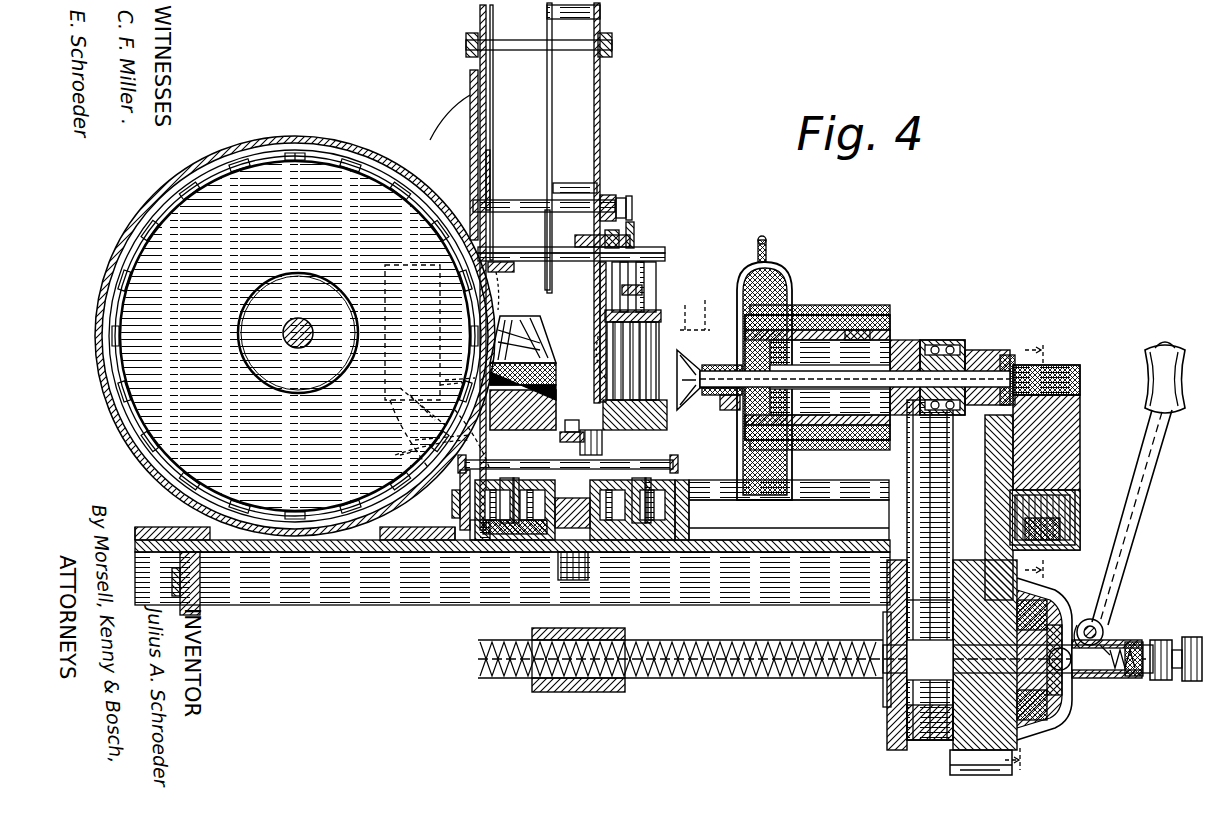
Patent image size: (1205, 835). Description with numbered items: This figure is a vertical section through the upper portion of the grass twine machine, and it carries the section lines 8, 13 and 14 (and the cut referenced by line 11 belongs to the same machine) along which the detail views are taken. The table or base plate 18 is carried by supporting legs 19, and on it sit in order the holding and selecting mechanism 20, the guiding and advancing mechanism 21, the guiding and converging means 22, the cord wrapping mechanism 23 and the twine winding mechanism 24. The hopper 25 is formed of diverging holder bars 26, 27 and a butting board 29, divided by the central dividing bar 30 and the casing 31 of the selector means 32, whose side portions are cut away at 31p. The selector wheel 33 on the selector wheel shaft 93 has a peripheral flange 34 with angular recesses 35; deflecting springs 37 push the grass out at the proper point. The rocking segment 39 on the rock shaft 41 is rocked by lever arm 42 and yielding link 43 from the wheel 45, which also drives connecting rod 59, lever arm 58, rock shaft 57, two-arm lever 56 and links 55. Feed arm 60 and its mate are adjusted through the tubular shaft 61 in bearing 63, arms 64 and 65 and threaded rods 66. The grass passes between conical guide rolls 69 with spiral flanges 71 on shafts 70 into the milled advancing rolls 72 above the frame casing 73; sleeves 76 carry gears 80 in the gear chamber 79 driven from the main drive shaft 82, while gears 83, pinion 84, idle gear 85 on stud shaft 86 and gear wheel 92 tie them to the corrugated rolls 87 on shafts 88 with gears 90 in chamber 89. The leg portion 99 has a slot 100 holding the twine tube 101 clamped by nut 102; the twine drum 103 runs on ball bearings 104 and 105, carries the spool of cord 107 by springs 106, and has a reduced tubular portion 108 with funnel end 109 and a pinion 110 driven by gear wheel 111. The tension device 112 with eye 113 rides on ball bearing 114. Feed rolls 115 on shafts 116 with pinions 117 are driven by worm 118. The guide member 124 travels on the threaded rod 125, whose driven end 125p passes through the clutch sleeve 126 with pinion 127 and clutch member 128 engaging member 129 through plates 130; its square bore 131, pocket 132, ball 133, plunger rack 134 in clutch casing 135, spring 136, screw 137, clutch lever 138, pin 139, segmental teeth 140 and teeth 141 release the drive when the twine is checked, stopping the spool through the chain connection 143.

The section line 8— 8 is at (688, 308).
The section line 11— 11 is at (1185, 375).
The section line 13— 13 is at (1046, 448).
The section line 14— 14 is at (1024, 669).
The table or base plate 18 is at (365, 605).
The supporting legs or frame members 19 is at (950, 762).
The holding and selecting mechanism 20 is at (445, 130).
The guiding and advancing mechanism 21 is at (478, 380).
The guiding and converging means 22 is at (665, 335).
The cord wrapping mechanism 23 is at (785, 272).
The twine winding mechanism 24 is at (1060, 728).
The hopper 25 is at (507, 110).
The holder bar 26 is at (552, 106).
The holder bar 27 is at (479, 22).
The butting or end board 29 is at (601, 115).
The central dividing bar 30 is at (494, 14).
The selector casing 31 is at (292, 138).
The cut away portions 31p is at (396, 367).
The selector means 32 is at (133, 433).
The selector disk or wheel 33 is at (170, 388).
The peripheral flange 34 is at (455, 228).
The angular recesses 35 is at (340, 505).
The deflecting springs 37 is at (420, 404).
The rocking segment 39 is at (490, 180).
The rock shaft 41 is at (628, 206).
The lever arm 42 is at (615, 195).
The yielding linked connection 43 is at (633, 212).
The wheel 45 is at (578, 415).
The links 55 is at (418, 450).
The two-arm lever 56 is at (456, 498).
The rock shaft 57 is at (700, 440).
The lever arm 58 is at (646, 419).
The connecting rod 59 is at (588, 432).
The lever feed arm 60 is at (480, 298).
The tubular adjusting shaft 61 is at (528, 250).
The bearing 63 is at (655, 250).
The upwardly extending arm 64 is at (622, 242).
The downwardly extending arm 65 is at (647, 293).
The threaded adjusting rods 66 is at (636, 232).
The conical guide rolls 69 is at (540, 335).
The vertical shafts 70 is at (522, 542).
The spirally trending flanges 71 is at (522, 318).
The milled advancing rolls 72 is at (556, 368).
The frame casing 73 is at (425, 432).
The sleeve 76 is at (465, 515).
The gear chamber 79 is at (480, 555).
The intermeshing gears 80 is at (470, 548).
The main drive shaft 82 is at (855, 428).
The intermeshing gears 83 is at (512, 540).
The pinion 84 is at (530, 542).
The idle gear 85 is at (610, 542).
The stud shaft 86 is at (580, 580).
The corrugated rolls 87 is at (643, 350).
The vertical shafts 88 is at (642, 542).
The gear chamber 89 is at (690, 528).
The intermeshing gears 90 is at (690, 486).
The gear wheel 92 is at (710, 515).
The selector wheel shaft 93 is at (298, 348).
The upstanding leg portion 99 is at (1078, 424).
The opening or slot 100 is at (978, 352).
The shouldered twine tube 101 is at (850, 340).
The nut 102 is at (1005, 356).
The twine drum 103 is at (810, 330).
The front ball bearing 104 is at (722, 421).
The rear ball bearing 105 is at (940, 338).
The spring members 106 is at (893, 312).
The spool of cord 107 is at (840, 328).
The reduced tubular portion 108 is at (740, 398).
The funnel shaped end 109 is at (708, 370).
The pinion 110 is at (915, 338).
The gear wheel 111 is at (905, 445).
The cup shaped twine tension device 112 is at (755, 262).
The peripheral eye 113 is at (782, 236).
The ball bearing connection 114 is at (712, 345).
The milled feed rolls 115 is at (1065, 364).
The vertical shafts 116 is at (1082, 480).
The intermeshing pinions 117 is at (1080, 500).
The worm 118 is at (1062, 533).
The twine guide member 124 is at (607, 693).
The reversely threaded rod 125 is at (815, 675).
The driven end 125p is at (905, 715).
The gear and clutch sleeve 126 is at (905, 740).
The pinion 127 is at (885, 618).
The friction clutch member 128 is at (950, 752).
The complementary clutch member 129 is at (1045, 715).
The interposed plates 130 is at (1052, 720).
The square bore 131 is at (1068, 668).
The pocket 132 is at (1100, 680).
The bearing ball 133 is at (1110, 676).
The plunger rack 134 is at (1135, 640).
The clutch casing 135 is at (1098, 624).
The coiled spring 136 is at (1135, 642).
The adjusting bolt or screw 137 is at (1192, 682).
The clutch lever 138 is at (1145, 472).
The pin 139 is at (1100, 634).
The segmental teeth 140 is at (1110, 626).
The plunger teeth 141 is at (1131, 675).
The chain and sprocket wheel connection 143 is at (882, 700).